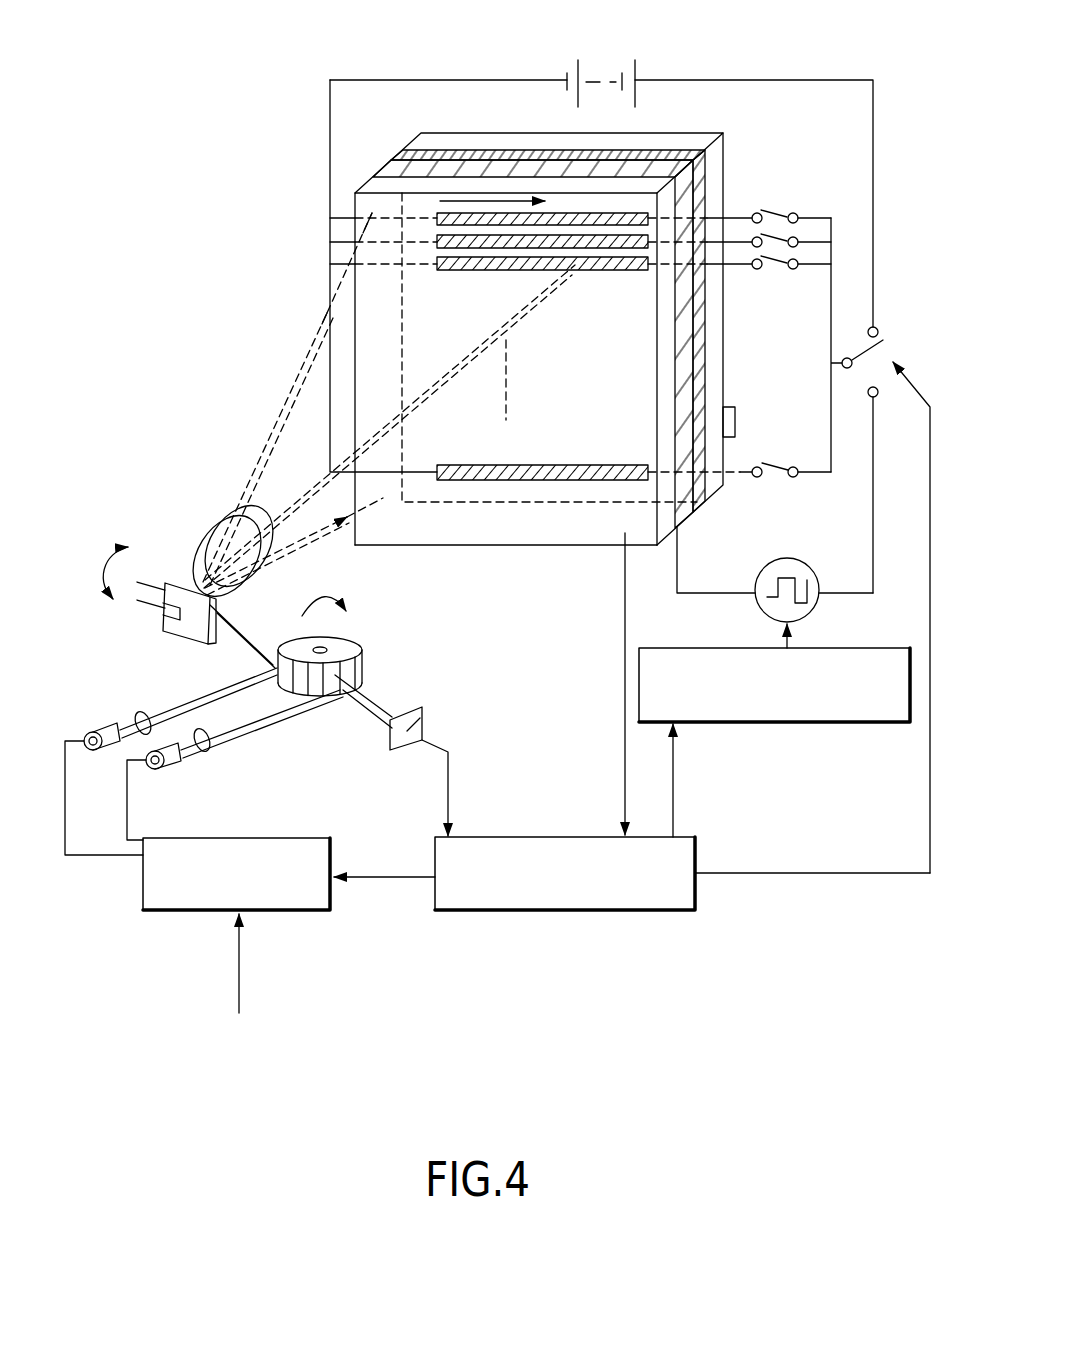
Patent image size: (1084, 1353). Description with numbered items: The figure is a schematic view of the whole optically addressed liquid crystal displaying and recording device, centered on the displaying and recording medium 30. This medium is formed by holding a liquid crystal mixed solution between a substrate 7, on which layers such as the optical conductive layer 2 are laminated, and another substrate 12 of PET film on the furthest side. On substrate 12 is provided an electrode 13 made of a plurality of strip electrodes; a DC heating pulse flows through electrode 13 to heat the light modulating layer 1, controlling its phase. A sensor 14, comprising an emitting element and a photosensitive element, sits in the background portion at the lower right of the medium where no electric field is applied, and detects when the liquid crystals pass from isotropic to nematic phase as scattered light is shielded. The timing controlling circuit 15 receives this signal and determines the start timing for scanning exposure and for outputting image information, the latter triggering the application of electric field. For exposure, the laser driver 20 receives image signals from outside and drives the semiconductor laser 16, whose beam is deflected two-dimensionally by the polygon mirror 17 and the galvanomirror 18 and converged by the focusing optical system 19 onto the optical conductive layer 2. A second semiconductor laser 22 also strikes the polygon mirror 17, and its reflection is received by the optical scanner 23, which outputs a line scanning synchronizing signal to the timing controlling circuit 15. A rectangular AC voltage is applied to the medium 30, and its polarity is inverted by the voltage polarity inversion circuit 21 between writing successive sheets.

The light modulating layer 1 is at (452, 320).
The optical conductive layer 2 is at (388, 170).
The substrate 7 is at (656, 198).
The substrate 12 is at (725, 146).
The electrode 13 is at (357, 207).
The sensor 14 is at (597, 528).
The timing controlling circuit 15 is at (632, 721).
The semiconductor laser 16 is at (108, 733).
The polygon mirror 17 is at (357, 641).
The galvanomirror 18 is at (148, 588).
The focusing optical system 19 is at (221, 524).
The laser driver 20 is at (236, 953).
The voltage polarity inversion circuit 21 is at (774, 624).
The semiconductor laser 22 is at (173, 757).
The optical scanner 23 is at (421, 712).
The displaying and recording medium 30 is at (485, 550).